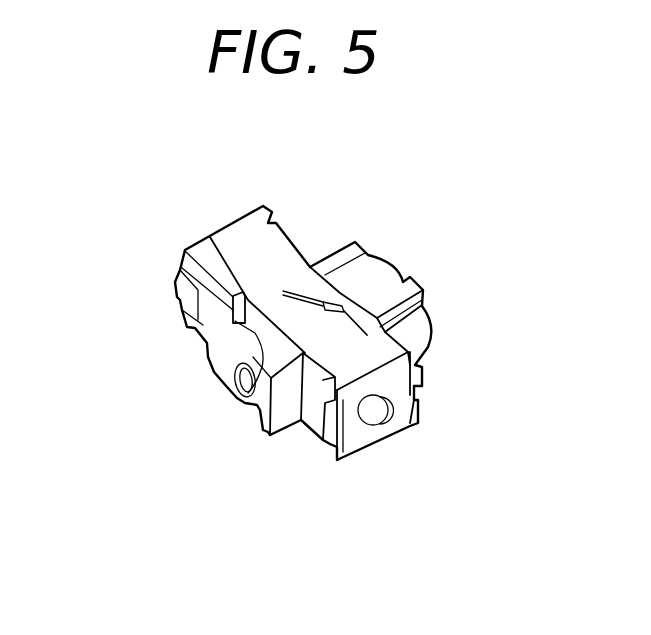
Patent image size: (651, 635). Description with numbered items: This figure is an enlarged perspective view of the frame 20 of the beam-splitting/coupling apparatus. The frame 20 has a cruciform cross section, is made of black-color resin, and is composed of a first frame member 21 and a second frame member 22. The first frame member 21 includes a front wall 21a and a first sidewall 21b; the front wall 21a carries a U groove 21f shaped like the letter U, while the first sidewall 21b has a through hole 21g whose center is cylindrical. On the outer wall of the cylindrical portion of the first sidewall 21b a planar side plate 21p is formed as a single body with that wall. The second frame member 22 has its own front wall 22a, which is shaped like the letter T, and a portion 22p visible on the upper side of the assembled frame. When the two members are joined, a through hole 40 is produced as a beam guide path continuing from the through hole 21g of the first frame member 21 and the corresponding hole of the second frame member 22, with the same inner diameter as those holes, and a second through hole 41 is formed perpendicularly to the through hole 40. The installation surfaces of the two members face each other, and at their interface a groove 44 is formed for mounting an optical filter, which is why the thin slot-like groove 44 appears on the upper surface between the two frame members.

The frame 20 is at (229, 199).
The first frame member 21 is at (362, 357).
The front wall 21a is at (357, 440).
The first sidewall 21b is at (205, 313).
The U groove 21f is at (420, 387).
The through hole 21g is at (231, 386).
The side plate 21p is at (264, 438).
The second frame member 22 is at (287, 270).
The front wall 22a is at (418, 400).
The upper block portion 22p is at (421, 285).
The through hole 40 is at (203, 431).
The through hole 41 is at (372, 413).
The groove 44 is at (307, 292).